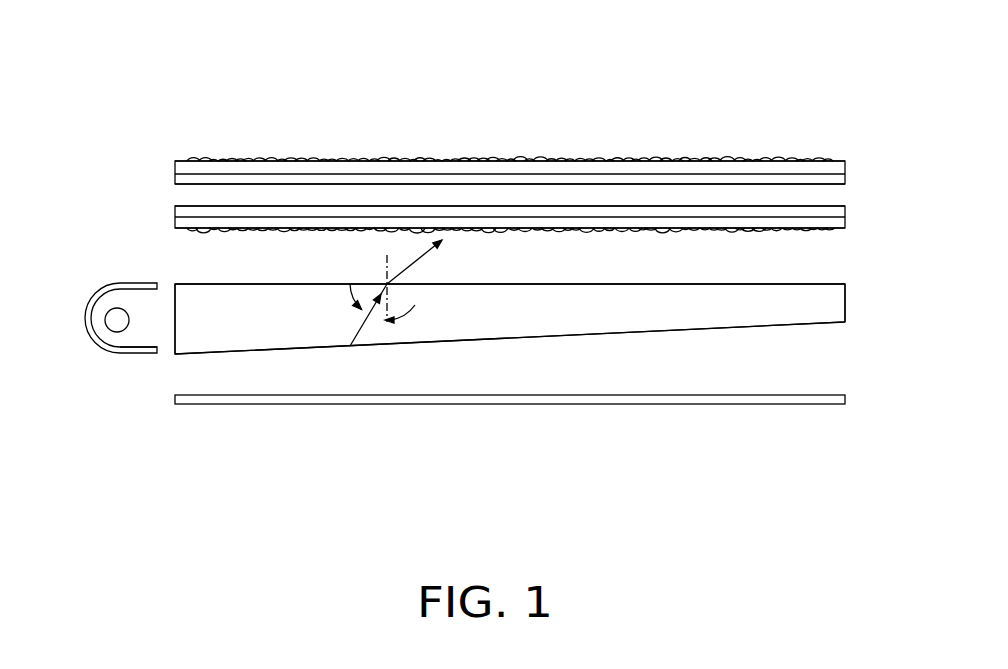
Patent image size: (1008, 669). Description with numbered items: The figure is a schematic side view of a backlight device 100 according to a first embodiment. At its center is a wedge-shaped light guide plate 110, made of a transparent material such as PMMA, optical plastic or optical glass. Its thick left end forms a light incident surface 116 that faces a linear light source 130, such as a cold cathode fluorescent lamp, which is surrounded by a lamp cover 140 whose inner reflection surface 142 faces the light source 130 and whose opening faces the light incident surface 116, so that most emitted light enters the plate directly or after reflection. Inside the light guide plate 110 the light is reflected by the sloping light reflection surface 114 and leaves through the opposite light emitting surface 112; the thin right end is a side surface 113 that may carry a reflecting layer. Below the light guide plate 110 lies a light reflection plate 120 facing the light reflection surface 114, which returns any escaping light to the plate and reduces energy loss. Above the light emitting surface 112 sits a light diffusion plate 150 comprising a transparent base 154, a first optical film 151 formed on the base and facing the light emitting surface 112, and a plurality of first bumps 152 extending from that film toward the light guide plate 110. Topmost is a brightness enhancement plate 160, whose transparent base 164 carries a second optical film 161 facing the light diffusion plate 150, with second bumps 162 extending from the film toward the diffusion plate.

The backlight device 100 is at (527, 42).
The light guide plate 110 is at (534, 312).
The light emitting surface 112 is at (820, 284).
The side surface 113 is at (845, 302).
The light reflection surface 114 is at (782, 326).
The light incident surface 116 is at (175, 312).
The light reflection plate 120 is at (818, 398).
The light source 130 is at (101, 321).
The lamp cover 140 is at (96, 294).
The inner reflection surface 142 is at (128, 348).
The light diffusion plate 150 is at (503, 218).
The first optical film 151 is at (843, 222).
The first bumps 152 is at (188, 240).
The transparent base 154 is at (842, 210).
The brightness enhancement plate 160 is at (507, 149).
The second optical film 161 is at (838, 170).
The second bumps 162 is at (543, 158).
The transparent base 164 is at (842, 178).